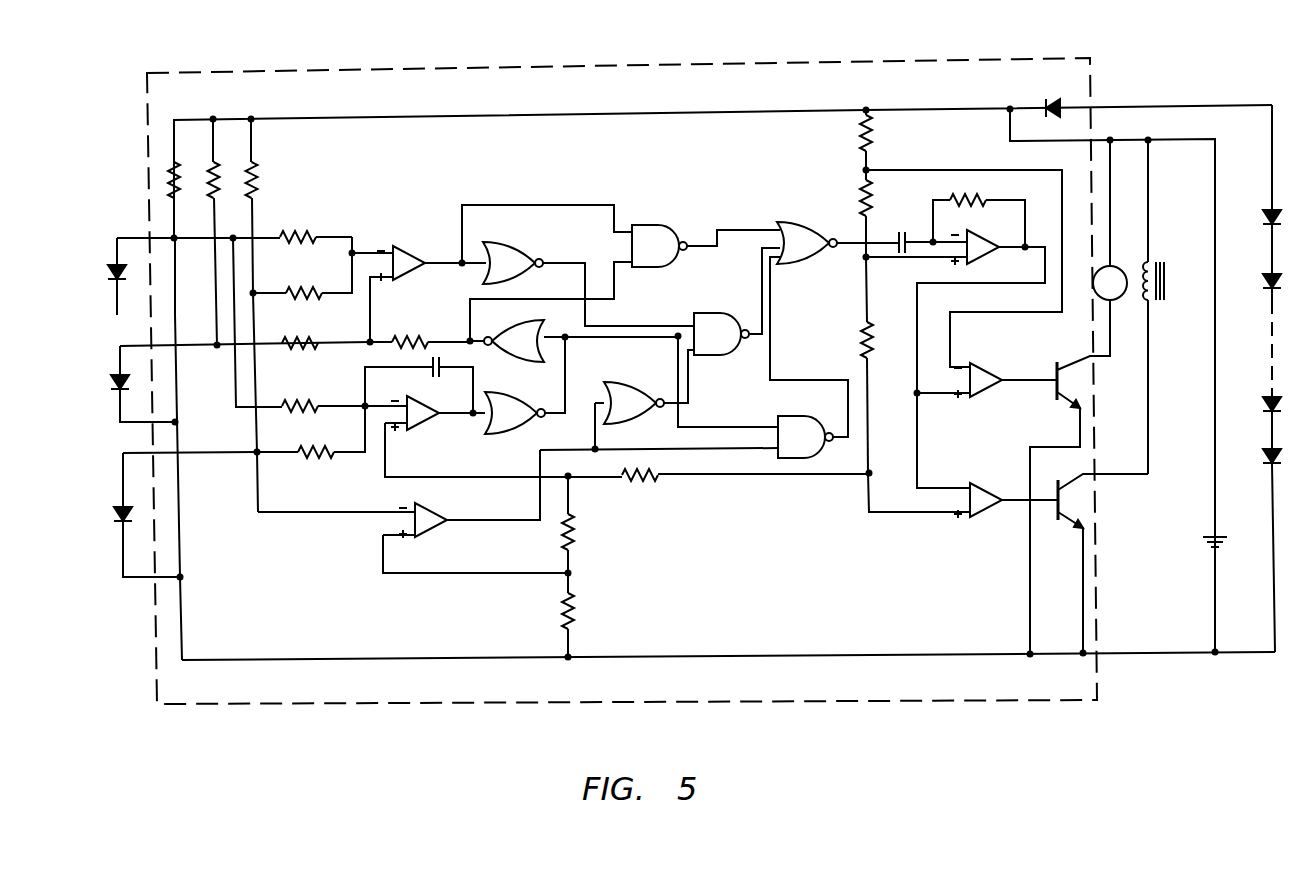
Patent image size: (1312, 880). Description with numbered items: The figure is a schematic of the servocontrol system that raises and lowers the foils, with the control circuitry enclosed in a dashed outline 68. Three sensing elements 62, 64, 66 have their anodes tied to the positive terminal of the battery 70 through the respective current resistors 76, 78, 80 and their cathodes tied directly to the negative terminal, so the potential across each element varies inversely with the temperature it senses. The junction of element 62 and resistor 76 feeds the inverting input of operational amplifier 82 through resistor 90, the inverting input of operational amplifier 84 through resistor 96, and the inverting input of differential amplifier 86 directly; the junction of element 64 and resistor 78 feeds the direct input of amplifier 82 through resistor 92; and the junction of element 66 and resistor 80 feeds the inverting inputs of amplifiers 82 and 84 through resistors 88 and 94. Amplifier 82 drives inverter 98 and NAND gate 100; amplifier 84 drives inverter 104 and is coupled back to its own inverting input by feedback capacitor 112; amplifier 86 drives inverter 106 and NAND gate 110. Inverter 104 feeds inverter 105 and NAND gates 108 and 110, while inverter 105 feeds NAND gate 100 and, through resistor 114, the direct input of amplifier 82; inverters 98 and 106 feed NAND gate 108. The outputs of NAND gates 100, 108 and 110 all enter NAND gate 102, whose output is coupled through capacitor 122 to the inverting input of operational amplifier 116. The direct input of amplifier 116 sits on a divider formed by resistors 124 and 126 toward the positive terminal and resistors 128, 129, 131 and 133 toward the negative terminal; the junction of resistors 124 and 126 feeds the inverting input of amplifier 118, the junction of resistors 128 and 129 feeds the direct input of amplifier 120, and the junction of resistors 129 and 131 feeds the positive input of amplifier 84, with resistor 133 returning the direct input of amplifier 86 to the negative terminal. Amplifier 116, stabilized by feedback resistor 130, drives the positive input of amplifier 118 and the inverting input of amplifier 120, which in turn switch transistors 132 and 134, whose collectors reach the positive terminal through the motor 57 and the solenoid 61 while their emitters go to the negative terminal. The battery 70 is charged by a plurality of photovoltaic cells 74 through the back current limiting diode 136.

The motor 57 is at (1138, 246).
The solenoid 61 is at (1158, 300).
The sensing element 62 is at (116, 520).
The sensing element 64 is at (112, 388).
The sensing element 66 is at (108, 276).
The control circuit 68 is at (681, 62).
The battery 70 is at (1212, 545).
The photovoltaic cells 74 is at (1265, 222).
The current resistor 76 is at (258, 183).
The current resistor 78 is at (218, 183).
The current resistor 80 is at (180, 183).
The operational amplifier 82 is at (405, 250).
The operational amplifier 84 is at (420, 440).
The differential amplifier 86 is at (442, 514).
The resistor 88 is at (284, 232).
The resistor 90 is at (288, 290).
The resistor 92 is at (308, 326).
The resistor 94 is at (306, 402).
The resistor 96 is at (312, 460).
The inverter 98 is at (520, 246).
The NAND gate 100 is at (648, 228).
The NAND gate 102 is at (805, 220).
The inverter 104 is at (516, 432).
The inverter 105 is at (522, 362).
The inverter 106 is at (645, 386).
The NAND gate 108 is at (734, 318).
The NAND gate 110 is at (800, 420).
The feedback capacitor 112 is at (448, 374).
The resistor 114 is at (406, 336).
The operational amplifier 116 is at (990, 252).
The operational amplifier 118 is at (978, 366).
The operational amplifier 120 is at (1003, 490).
The capacitor 122 is at (910, 218).
The resistor 124 is at (870, 140).
The resistor 126 is at (870, 196).
The resistor 128 is at (860, 330).
The resistor 129 is at (650, 480).
The feedback resistor 130 is at (982, 196).
The resistor 131 is at (572, 530).
The switching transistor 132 is at (1052, 368).
The resistor 133 is at (576, 612).
The switching transistor 134 is at (1056, 522).
The back current limiting diode 136 is at (1050, 100).